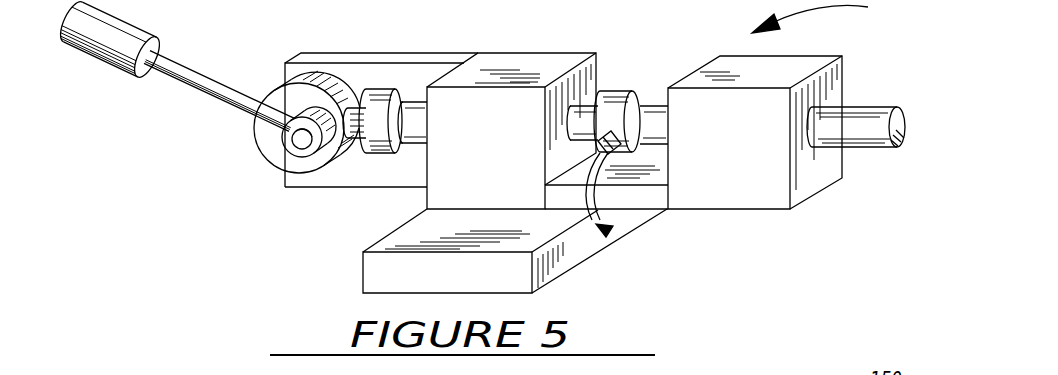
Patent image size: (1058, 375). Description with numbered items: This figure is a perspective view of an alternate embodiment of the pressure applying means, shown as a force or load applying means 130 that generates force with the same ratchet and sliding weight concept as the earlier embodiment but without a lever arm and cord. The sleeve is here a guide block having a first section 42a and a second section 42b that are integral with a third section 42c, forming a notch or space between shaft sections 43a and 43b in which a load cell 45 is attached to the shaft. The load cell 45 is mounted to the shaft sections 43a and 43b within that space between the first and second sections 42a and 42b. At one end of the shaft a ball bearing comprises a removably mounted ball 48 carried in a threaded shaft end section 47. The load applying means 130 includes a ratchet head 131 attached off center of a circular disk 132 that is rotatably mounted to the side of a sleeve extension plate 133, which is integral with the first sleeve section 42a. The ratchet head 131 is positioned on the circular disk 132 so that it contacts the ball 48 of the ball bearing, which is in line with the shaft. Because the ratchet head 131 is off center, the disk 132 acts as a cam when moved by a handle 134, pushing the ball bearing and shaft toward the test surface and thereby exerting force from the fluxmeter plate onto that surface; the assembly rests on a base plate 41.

The base plate 41 is at (577, 252).
The first section 42a is at (542, 34).
The second section 42b is at (783, 72).
The third section 42c is at (650, 172).
The shaft section 43a is at (420, 125).
The shaft section 43b is at (868, 107).
The load cell 45 is at (647, 100).
The threaded shaft end section 47 is at (386, 110).
The ball 48 is at (355, 146).
The load applying means 130 is at (836, 16).
The ratchet head 131 is at (302, 124).
The circular disk 132 is at (287, 94).
The sleeve extension plate 133 is at (348, 56).
The handle 134 is at (170, 78).